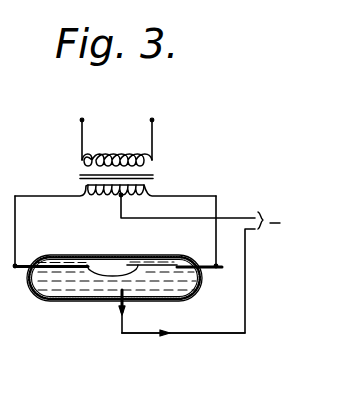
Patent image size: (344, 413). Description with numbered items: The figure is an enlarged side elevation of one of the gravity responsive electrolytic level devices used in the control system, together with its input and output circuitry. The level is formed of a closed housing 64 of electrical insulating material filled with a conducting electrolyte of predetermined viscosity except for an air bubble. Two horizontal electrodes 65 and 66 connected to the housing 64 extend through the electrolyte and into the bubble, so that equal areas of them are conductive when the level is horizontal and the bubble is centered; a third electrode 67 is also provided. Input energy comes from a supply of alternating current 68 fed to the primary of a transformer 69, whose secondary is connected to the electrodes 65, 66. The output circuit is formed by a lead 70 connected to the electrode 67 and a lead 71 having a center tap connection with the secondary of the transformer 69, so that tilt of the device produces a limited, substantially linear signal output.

The closed housing 64 is at (45, 303).
The horizontal electrode 65 is at (63, 256).
The horizontal electrode 66 is at (182, 258).
The third electrode 67 is at (125, 306).
The supply of alternating current electrical energy 68 is at (107, 123).
The transformer 69 is at (157, 177).
The lead 70 is at (185, 334).
The lead 71 is at (133, 219).